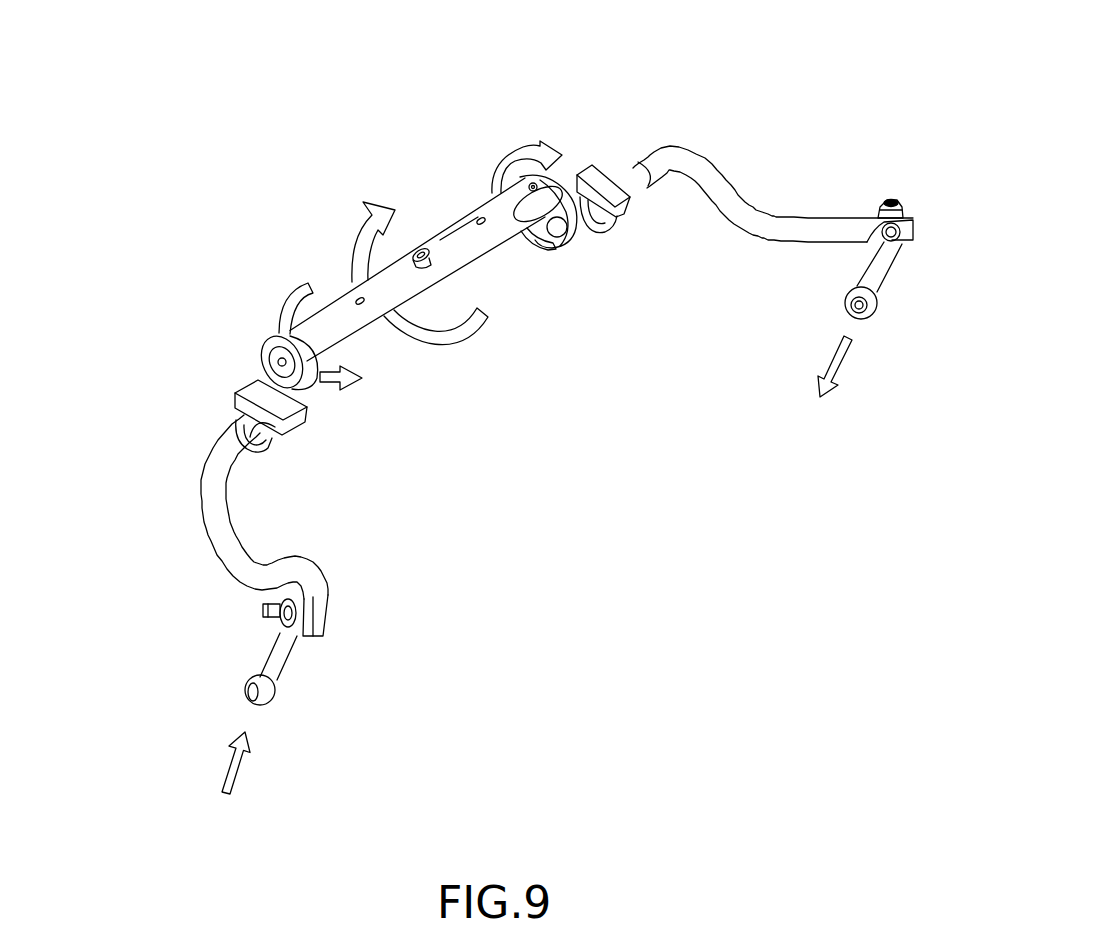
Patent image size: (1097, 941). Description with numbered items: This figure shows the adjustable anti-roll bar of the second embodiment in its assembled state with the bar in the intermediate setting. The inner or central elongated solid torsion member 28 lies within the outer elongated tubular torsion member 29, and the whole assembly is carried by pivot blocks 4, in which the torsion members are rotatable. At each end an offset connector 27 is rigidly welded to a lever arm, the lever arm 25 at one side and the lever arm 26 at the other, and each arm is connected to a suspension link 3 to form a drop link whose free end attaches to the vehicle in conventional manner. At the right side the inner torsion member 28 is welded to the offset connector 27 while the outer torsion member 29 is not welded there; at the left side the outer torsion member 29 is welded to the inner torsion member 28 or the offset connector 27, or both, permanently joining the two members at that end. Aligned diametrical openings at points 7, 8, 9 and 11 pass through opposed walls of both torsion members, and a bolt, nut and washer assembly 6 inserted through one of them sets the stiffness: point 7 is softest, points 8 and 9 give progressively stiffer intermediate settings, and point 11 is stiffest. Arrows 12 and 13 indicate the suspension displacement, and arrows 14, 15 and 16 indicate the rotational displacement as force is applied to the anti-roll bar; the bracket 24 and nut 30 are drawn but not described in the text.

The suspension link 3 is at (573, 484).
The pivot block 4 is at (472, 339).
The bolt, nut and washer assembly 6 is at (440, 269).
The point 7 is at (257, 225).
The point 8 is at (378, 190).
The point 9 is at (390, 138).
The point 11 is at (476, 125).
The arrow 12 is at (879, 397).
The arrow 13 is at (283, 767).
The arrow 14 is at (451, 143).
The arrow 15 is at (245, 285).
The arrow 16 is at (351, 232).
The bracket 24 is at (495, 383).
The lever arm 25 is at (773, 193).
The lever arm 26 is at (224, 540).
The offset connector 27 is at (395, 230).
The inner elongated torsion member 28 is at (200, 394).
The outer elongated torsion member 29 is at (486, 412).
The nut 30 is at (583, 372).